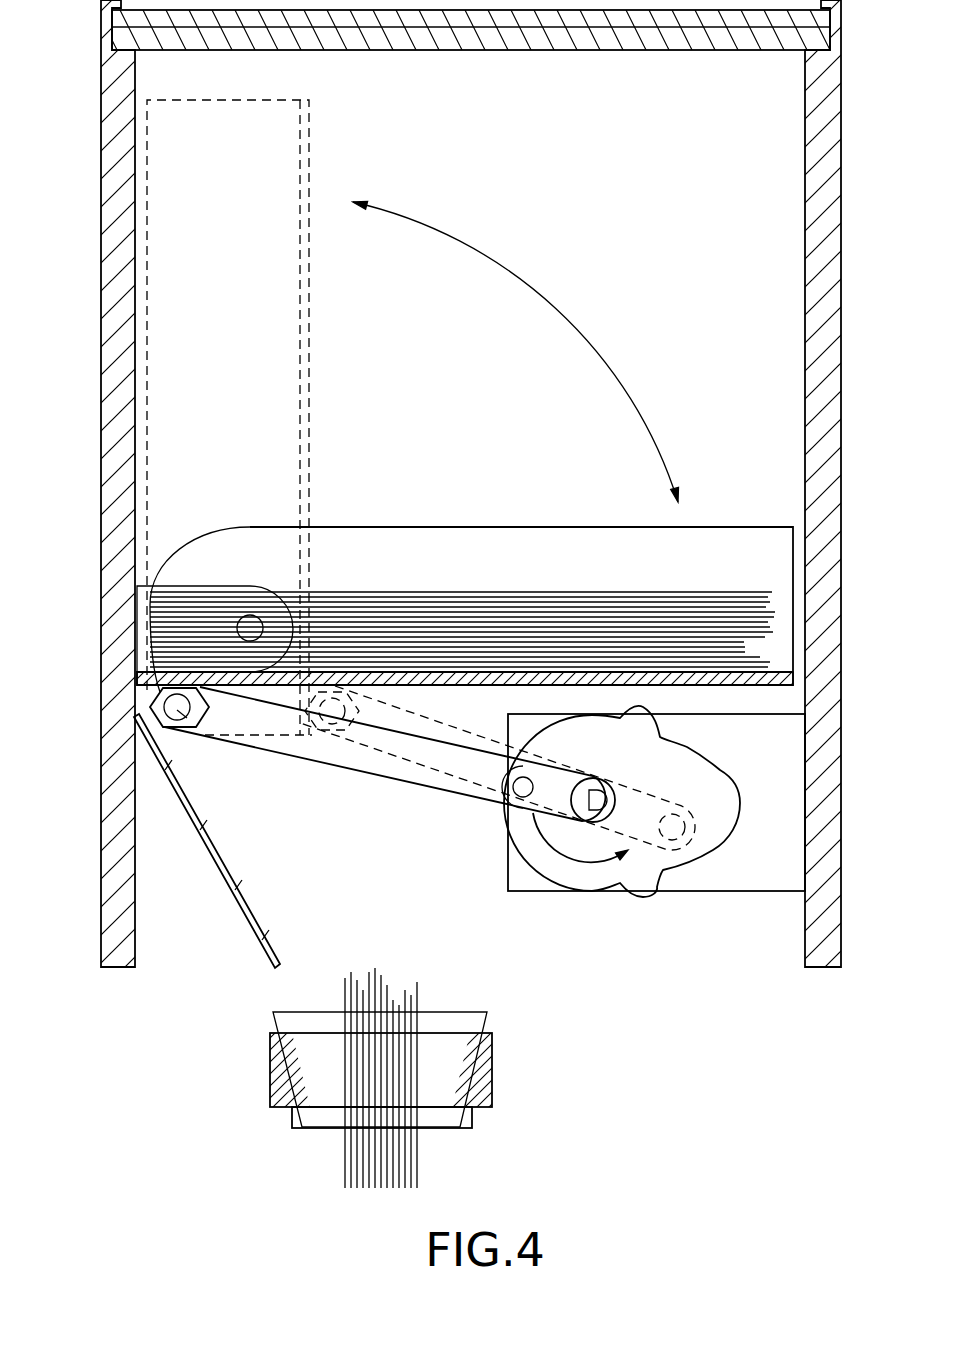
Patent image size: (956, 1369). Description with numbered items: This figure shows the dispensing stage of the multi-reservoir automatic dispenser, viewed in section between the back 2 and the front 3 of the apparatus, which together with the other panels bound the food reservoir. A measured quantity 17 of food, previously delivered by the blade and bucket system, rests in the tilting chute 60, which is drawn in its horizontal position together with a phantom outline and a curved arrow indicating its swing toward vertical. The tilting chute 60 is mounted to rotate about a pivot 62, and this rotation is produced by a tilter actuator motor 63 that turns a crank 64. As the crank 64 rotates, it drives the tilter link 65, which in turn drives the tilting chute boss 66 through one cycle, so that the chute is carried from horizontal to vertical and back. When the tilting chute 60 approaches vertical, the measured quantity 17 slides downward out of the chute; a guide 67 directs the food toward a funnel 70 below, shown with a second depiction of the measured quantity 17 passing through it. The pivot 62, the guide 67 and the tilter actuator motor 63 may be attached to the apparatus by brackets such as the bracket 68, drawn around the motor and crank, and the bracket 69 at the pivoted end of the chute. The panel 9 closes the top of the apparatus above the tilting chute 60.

The back 2 is at (805, 263).
The front 3 is at (101, 545).
The lid 9 is at (515, 52).
The measured quantity 17 is at (553, 590).
The tilting chute 60 is at (475, 526).
The pivot 62 is at (252, 641).
The tilter actuator motor 63 is at (707, 862).
The crank 64 is at (597, 860).
The tilter link 65 is at (410, 790).
The tilting chute boss 66 is at (205, 718).
The guide 67 is at (232, 905).
The bracket 68 is at (767, 893).
The bracket 69 is at (212, 586).
The funnel 70 is at (495, 1040).